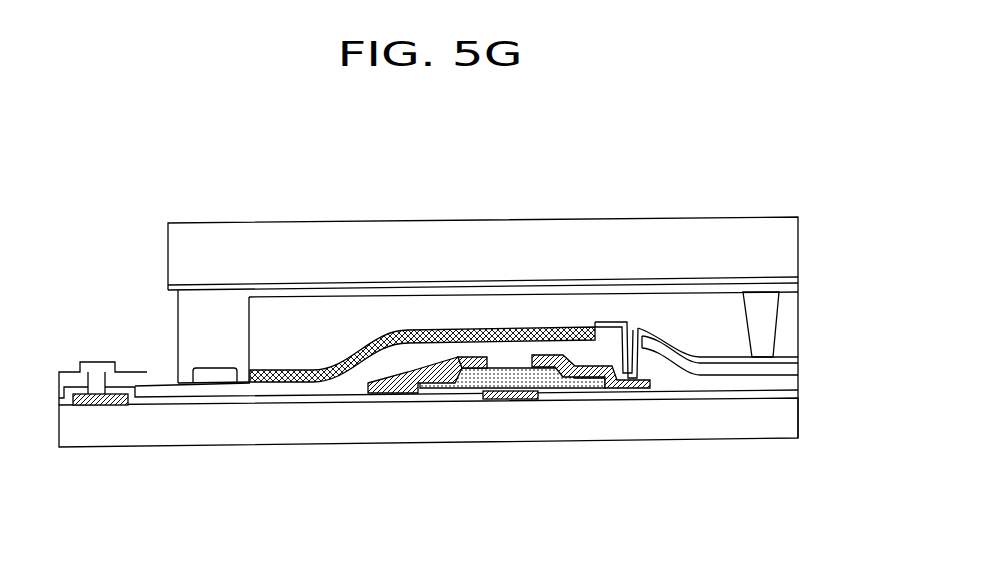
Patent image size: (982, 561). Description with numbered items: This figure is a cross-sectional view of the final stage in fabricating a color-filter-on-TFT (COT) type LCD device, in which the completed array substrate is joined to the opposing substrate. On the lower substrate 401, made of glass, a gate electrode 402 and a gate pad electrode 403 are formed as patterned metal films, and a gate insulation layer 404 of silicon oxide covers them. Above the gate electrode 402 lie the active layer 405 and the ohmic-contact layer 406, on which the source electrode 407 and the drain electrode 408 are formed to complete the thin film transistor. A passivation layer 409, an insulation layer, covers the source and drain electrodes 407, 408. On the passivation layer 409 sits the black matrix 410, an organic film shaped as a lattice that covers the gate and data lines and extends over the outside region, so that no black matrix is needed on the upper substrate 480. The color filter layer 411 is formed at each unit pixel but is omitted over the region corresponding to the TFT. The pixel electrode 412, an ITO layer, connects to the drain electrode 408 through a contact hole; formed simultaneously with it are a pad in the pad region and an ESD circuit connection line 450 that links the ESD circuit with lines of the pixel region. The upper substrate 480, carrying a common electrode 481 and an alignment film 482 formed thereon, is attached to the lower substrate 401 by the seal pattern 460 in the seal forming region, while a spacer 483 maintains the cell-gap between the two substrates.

The lower substrate 401 is at (678, 412).
The gate electrode 402 is at (510, 399).
The gate pad electrode 403 is at (99, 405).
The gate insulation layer 404 is at (766, 398).
The active layer 405 is at (578, 388).
The ohmic-contact layer 406 is at (443, 383).
The source electrode 407 is at (466, 356).
The drain electrode 408 is at (548, 355).
The passivation layer 409 is at (730, 391).
The black matrix 410 is at (348, 382).
The color filter layer 411 is at (792, 368).
The pixel electrode 412 is at (614, 321).
The ESD circuit connection line 450 is at (208, 375).
The seal pattern 460 is at (197, 318).
The upper substrate 480 is at (197, 255).
The common electrode 481 is at (291, 289).
The alignment film 482 is at (333, 296).
The spacer 483 is at (757, 312).